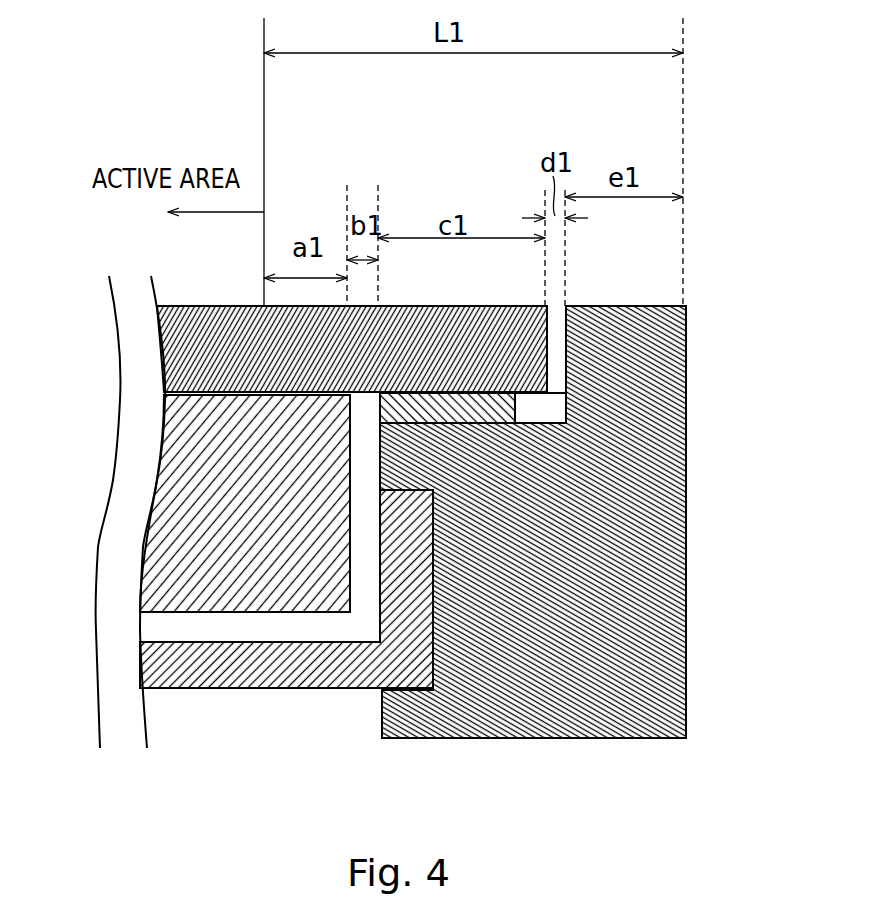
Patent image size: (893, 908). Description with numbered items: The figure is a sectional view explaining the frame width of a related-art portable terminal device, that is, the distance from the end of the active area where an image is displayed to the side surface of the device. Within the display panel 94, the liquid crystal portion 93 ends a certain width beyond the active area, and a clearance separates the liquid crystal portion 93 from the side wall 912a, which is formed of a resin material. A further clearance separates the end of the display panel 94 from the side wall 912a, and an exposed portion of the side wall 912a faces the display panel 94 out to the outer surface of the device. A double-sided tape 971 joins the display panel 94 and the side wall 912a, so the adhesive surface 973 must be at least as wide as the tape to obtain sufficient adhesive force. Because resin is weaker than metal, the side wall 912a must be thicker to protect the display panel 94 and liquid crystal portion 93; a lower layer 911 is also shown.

The display panel 94 is at (172, 362).
The liquid crystal portion 93 is at (162, 513).
The lower electrode 911 is at (150, 672).
The side wall 912a is at (660, 553).
The double-sided tape 971 is at (515, 407).
The adhesive surface 973 is at (468, 420).